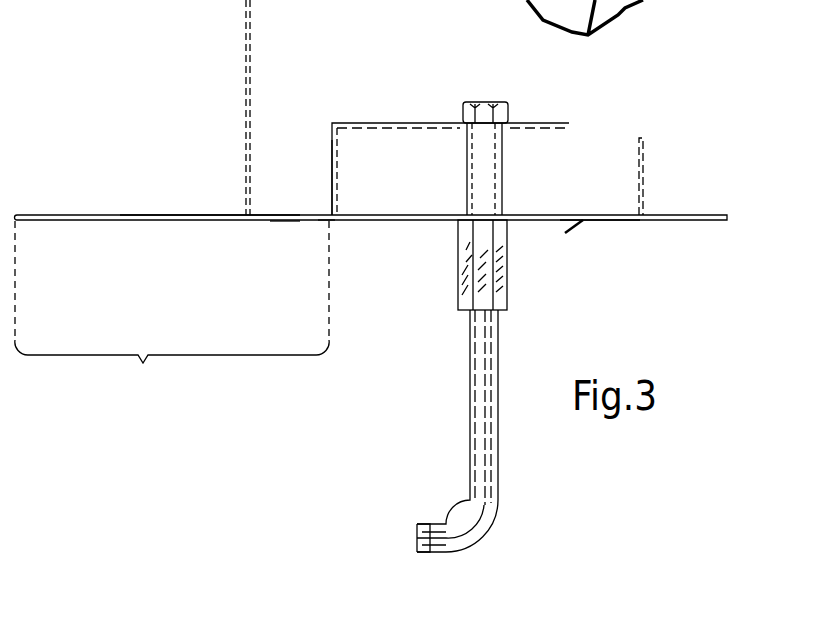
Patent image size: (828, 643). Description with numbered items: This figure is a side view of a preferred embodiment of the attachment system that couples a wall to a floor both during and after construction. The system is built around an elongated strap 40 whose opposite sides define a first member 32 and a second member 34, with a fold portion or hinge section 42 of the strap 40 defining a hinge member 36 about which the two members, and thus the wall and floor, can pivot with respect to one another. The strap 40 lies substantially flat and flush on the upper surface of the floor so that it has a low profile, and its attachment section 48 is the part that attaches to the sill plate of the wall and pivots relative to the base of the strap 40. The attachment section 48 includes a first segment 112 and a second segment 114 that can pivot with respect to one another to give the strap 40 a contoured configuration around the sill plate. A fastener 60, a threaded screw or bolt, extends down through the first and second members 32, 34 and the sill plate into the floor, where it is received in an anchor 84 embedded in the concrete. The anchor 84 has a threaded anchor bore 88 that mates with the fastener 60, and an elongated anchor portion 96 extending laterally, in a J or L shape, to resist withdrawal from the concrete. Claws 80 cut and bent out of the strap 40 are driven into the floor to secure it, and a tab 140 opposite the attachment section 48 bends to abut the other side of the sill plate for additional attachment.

The first member 32 is at (263, 221).
The second member 34 is at (590, 221).
The hinge member 36 is at (326, 221).
The strap 40 is at (216, 221).
The hinge section 42 is at (333, 212).
The attachment section 48 is at (172, 365).
The fastener 60 is at (482, 102).
The claw 80 is at (580, 236).
The anchor 84 is at (498, 443).
The anchor bore 88 is at (500, 296).
The anchor portion 96 is at (420, 552).
The first segment 112 is at (246, 68).
The second segment 114 is at (330, 147).
The tab 140 is at (665, 215).